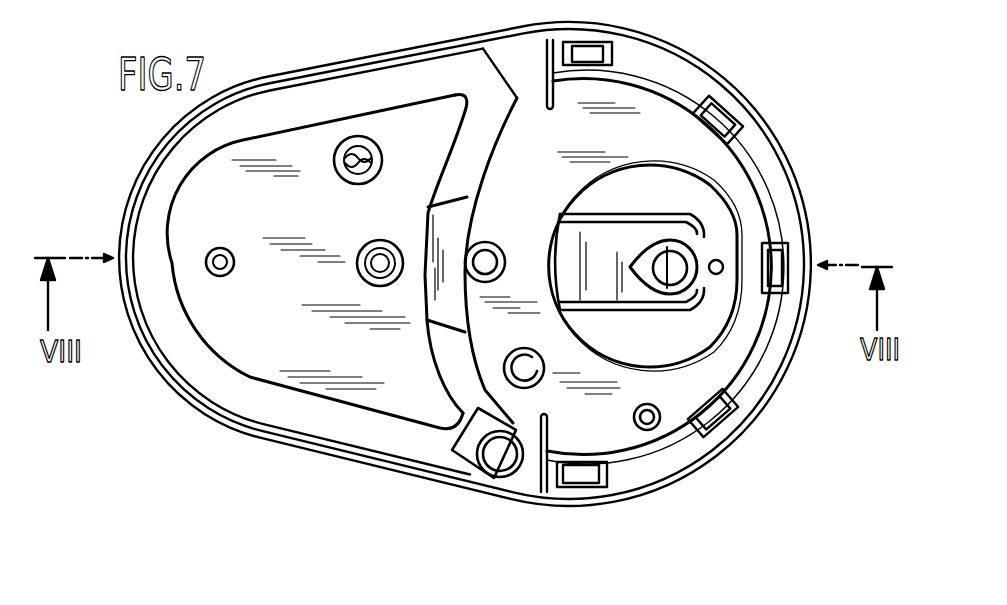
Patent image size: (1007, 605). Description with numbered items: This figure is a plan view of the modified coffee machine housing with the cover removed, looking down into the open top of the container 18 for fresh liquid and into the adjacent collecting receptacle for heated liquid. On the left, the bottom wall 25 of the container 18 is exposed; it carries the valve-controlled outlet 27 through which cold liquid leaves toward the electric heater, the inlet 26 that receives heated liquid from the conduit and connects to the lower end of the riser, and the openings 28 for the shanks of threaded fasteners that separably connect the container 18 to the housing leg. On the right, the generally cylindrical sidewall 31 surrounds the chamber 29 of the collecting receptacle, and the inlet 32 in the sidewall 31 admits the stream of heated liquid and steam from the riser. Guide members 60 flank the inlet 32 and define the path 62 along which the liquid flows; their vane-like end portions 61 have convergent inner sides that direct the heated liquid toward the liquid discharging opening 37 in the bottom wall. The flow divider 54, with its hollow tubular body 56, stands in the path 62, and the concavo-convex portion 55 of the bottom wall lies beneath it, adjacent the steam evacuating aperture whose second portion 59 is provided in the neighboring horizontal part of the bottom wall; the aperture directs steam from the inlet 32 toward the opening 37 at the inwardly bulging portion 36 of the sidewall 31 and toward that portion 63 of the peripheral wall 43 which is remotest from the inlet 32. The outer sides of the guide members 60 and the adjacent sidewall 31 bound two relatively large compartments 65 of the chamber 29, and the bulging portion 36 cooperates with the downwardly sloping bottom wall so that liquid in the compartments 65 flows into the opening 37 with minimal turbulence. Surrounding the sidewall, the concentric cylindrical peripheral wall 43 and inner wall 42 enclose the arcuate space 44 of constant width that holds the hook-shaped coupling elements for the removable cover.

The container 18 is at (100, 7).
The bottom wall 25 is at (313, 339).
The inlet 26 is at (366, 246).
The outlet 27 is at (333, 166).
The openings 28 is at (236, 248).
The chamber 29 is at (547, 207).
The cylindrical sidewall 31 is at (586, 188).
The inlet 32 is at (535, 261).
The inwardly bulging portion 36 is at (742, 246).
The liquid discharging opening 37 is at (783, 253).
The inner wall 42 is at (653, 87).
The peripheral wall 43 is at (590, 52).
The arcuate space 44 is at (688, 93).
The flow divider 54 is at (709, 298).
The concavo-convex portion 55 is at (652, 270).
The hollow tubular body 56 is at (678, 245).
The second portion of aperture 59 is at (723, 266).
The guide members 60 is at (607, 215).
The vane-like end portions 61 is at (700, 305).
The path 62 is at (598, 298).
The portion of peripheral wall 63 is at (808, 259).
The compartments 65 is at (652, 182).